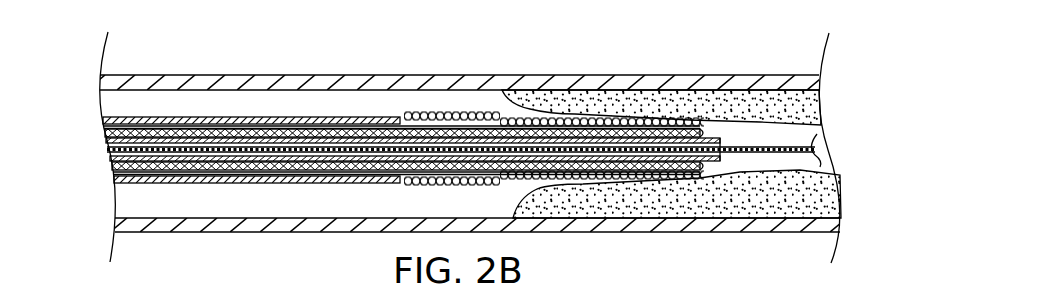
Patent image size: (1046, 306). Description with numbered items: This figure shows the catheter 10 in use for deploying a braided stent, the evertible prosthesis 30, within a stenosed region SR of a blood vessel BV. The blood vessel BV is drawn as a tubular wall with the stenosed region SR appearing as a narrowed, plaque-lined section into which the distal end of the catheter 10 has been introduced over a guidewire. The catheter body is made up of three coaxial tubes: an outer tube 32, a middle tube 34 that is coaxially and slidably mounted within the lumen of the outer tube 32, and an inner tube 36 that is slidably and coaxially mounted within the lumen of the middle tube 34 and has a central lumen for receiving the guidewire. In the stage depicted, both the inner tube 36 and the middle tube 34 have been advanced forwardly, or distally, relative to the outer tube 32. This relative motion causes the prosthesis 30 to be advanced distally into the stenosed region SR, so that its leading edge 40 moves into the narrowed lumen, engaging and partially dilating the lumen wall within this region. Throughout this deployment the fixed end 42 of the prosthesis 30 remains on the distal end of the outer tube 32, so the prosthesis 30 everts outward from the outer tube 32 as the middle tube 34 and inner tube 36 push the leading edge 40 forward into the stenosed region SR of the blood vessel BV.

The catheter 10 is at (72, 110).
The evertible prosthesis 30 is at (612, 157).
The outer tube 32 is at (297, 182).
The middle tube 34 is at (231, 172).
The inner tube 36 is at (183, 160).
The leading edge 40 is at (714, 175).
The fixed end 42 is at (425, 114).
The blood vessel BV is at (683, 75).
The stenosed region SR is at (744, 198).